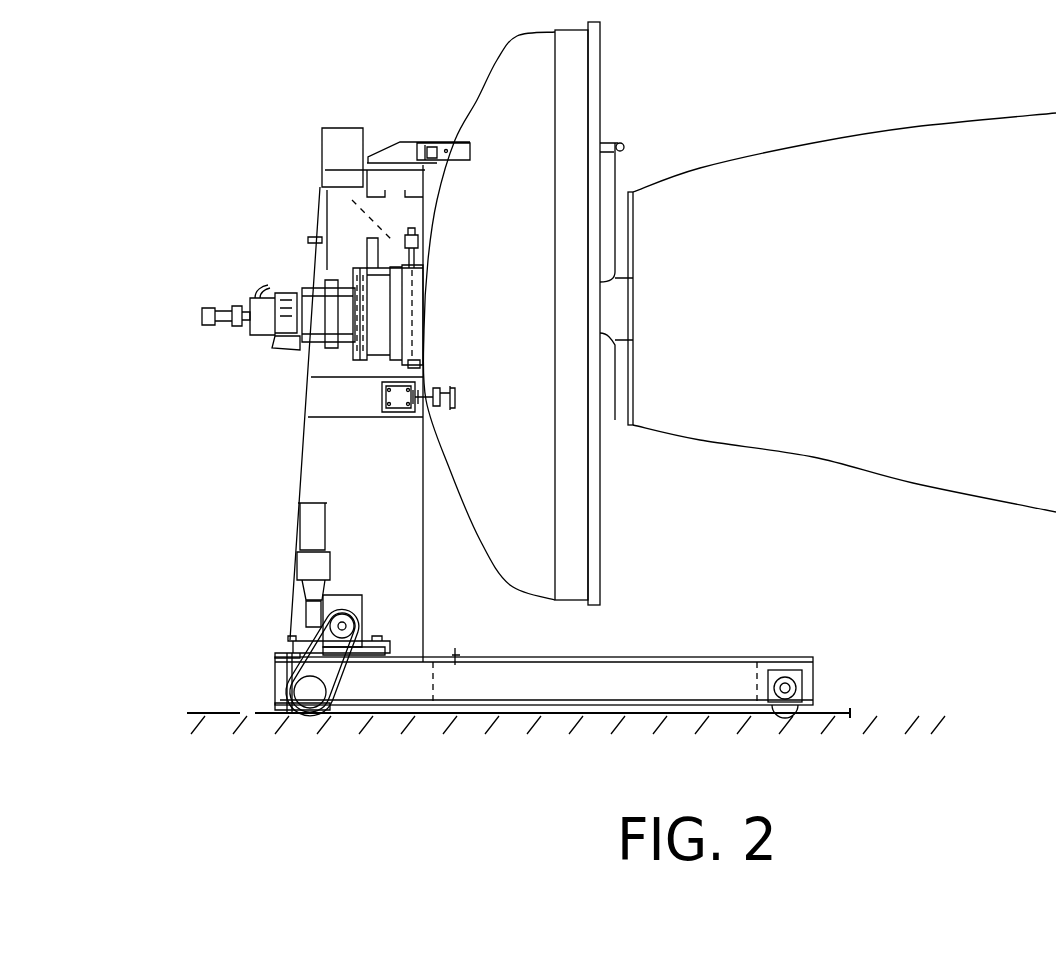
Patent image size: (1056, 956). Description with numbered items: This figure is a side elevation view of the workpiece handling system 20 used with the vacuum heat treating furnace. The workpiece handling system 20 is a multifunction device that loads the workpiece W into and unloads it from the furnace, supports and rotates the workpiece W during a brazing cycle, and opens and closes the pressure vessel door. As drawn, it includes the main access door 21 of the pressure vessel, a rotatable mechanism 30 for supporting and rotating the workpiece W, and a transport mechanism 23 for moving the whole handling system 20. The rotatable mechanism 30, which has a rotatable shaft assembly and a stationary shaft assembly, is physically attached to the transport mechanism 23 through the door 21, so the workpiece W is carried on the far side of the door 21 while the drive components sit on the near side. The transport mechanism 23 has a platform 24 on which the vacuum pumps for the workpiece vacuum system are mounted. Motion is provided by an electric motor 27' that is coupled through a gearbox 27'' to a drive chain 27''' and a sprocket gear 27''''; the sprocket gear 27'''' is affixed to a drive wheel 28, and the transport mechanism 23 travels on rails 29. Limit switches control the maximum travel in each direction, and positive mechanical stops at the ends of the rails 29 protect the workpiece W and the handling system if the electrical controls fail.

The workpiece handling system 20 is at (319, 422).
The main access door 21 is at (514, 78).
The transport mechanism 23 is at (290, 603).
The platform 24 is at (483, 657).
The electric motor 27' is at (347, 536).
The gearbox 27'' is at (355, 577).
The drive chain 27''' is at (350, 633).
The sprocket gear 27'''' is at (280, 674).
The drive wheel 28 is at (338, 699).
The rails 29 is at (830, 712).
The rotatable mechanism 30 is at (296, 273).
The workpiece W is at (924, 322).